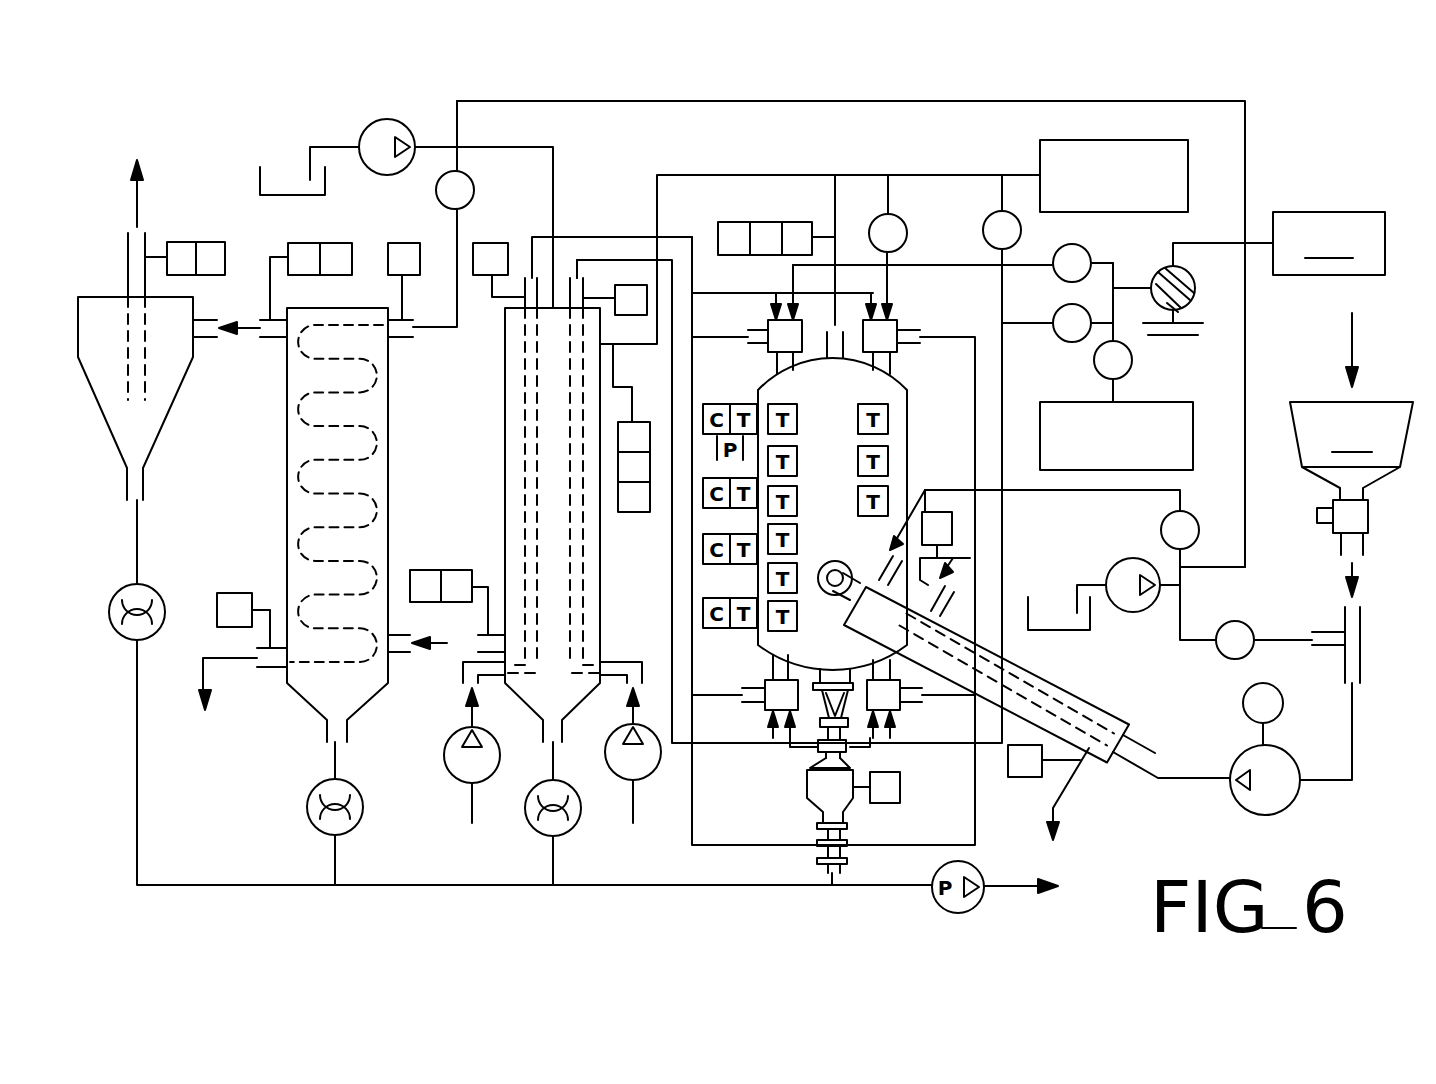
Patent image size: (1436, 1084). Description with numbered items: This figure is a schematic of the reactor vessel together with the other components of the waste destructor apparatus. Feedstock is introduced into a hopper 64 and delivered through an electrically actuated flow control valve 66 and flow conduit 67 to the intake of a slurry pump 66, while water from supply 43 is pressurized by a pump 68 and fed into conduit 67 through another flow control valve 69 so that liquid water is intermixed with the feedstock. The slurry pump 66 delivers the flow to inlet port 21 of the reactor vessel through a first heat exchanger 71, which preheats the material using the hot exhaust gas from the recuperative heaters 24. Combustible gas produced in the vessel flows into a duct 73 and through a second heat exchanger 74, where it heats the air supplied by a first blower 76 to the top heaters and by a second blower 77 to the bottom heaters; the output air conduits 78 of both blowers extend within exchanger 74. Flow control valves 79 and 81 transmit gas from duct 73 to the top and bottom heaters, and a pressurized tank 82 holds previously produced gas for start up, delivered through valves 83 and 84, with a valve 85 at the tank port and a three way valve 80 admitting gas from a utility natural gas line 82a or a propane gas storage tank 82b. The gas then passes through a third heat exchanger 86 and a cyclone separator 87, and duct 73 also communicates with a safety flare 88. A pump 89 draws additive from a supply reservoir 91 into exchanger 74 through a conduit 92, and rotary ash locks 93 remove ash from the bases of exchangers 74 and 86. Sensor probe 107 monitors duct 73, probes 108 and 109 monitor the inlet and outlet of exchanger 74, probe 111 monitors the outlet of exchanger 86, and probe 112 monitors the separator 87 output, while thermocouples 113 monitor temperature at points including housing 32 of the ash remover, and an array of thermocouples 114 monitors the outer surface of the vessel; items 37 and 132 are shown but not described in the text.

The inlet port 21 is at (843, 563).
The recuperative heaters 24 is at (763, 710).
The housing 32 is at (807, 787).
The bottom outlet fitting 37 is at (833, 669).
The water supply 43 is at (1093, 625).
The hopper 64 is at (1351, 406).
The slurry pump 66 is at (1332, 532).
The flow conduit 67 is at (1362, 625).
The pump 68 is at (1115, 560).
The flow control valve 69 is at (1228, 658).
The first heat exchanger 71 is at (1092, 700).
The duct 73 is at (863, 173).
The second heat exchanger 74 is at (502, 398).
The first blower 76 is at (442, 757).
The second blower 77 is at (652, 775).
The output air conduits 78 is at (521, 465).
The flow control valve 79 is at (908, 222).
The three way valve 80 is at (1193, 285).
The flow control valve 81 is at (982, 232).
The pressurized tank 82 is at (1160, 402).
The utility natural gas line 82a is at (1163, 338).
The propane gas storage tank 82b is at (1329, 243).
The flow control valve 83 is at (1090, 250).
The flow control valve 84 is at (1060, 335).
The valve 85 is at (1097, 366).
The third heat exchanger 86 is at (287, 498).
The cyclone separator 87 is at (172, 408).
The safety flare 88 is at (1038, 152).
The pump 89 is at (360, 130).
The supply reservoir 91 is at (322, 188).
The conduit 92 is at (555, 187).
The rotary ash locks 93 is at (363, 815).
The sensor probe 107 is at (782, 222).
The sensor probe 108 is at (635, 513).
The sensor probe 109 is at (448, 570).
The sensor probe 111 is at (330, 243).
The sensor probe 112 is at (205, 240).
The thermocouples 113 is at (402, 242).
The thermocouples 114 is at (778, 400).
The valve 132 is at (474, 183).